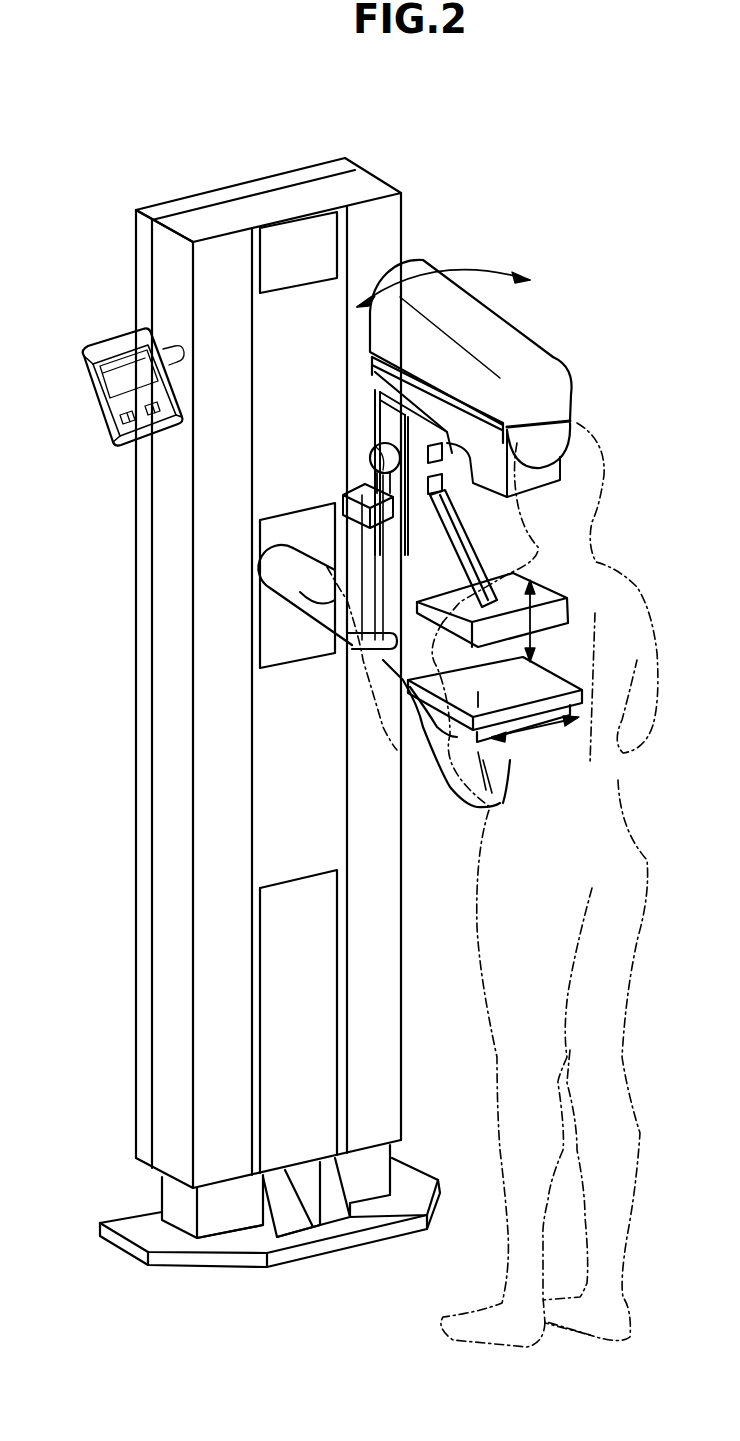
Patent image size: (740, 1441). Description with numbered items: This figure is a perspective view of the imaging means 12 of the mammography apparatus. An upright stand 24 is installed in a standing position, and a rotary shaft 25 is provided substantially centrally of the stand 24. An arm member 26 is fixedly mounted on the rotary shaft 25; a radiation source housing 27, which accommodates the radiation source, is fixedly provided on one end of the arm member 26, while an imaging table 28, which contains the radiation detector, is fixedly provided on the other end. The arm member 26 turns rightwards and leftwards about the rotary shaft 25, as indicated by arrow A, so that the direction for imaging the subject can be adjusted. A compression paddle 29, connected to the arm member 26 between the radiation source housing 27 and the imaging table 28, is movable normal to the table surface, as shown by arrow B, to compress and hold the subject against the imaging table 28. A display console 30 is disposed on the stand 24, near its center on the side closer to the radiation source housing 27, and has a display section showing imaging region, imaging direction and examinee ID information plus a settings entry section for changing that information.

The imaging means 12 is at (450, 172).
The stand 24 is at (180, 930).
The rotary shaft 25 is at (302, 560).
The arm member 26 is at (372, 434).
The radiation source housing 27 is at (550, 393).
The imaging table 28 is at (545, 683).
The compression paddle 29 is at (560, 610).
The display console 30 is at (110, 386).